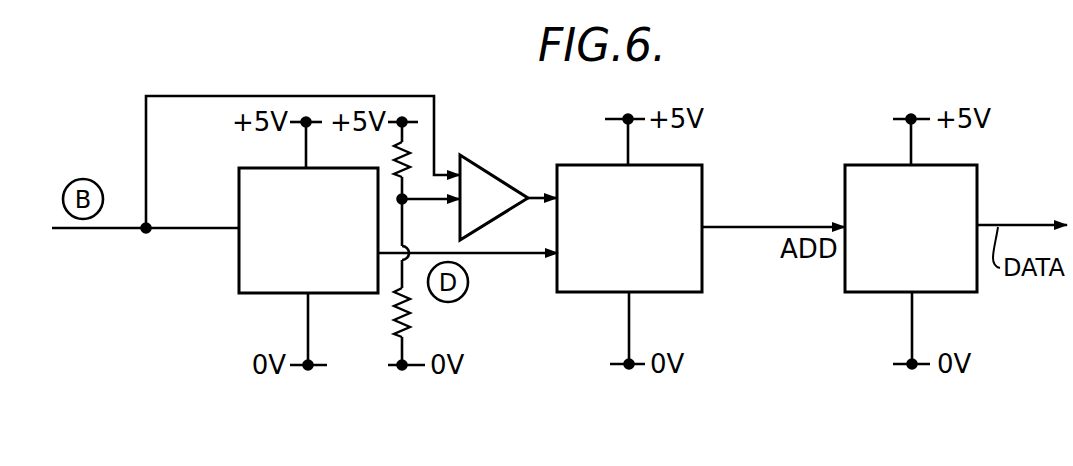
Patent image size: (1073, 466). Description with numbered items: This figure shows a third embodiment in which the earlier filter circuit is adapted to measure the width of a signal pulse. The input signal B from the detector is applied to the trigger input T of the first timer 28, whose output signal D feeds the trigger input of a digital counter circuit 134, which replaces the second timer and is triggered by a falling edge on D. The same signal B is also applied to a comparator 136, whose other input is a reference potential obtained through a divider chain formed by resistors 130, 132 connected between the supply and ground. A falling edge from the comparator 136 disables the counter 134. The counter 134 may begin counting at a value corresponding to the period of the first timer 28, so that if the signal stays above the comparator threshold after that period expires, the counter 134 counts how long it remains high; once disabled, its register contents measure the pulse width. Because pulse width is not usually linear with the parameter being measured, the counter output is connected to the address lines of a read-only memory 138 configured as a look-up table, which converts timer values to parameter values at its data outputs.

The first TTL timer 28 is at (253, 280).
The divider chain resistor 130 is at (423, 147).
The divider chain resistor 132 is at (413, 325).
The digital counter circuit 134 is at (702, 264).
The comparator 136 is at (493, 171).
The ROM 138 is at (968, 190).